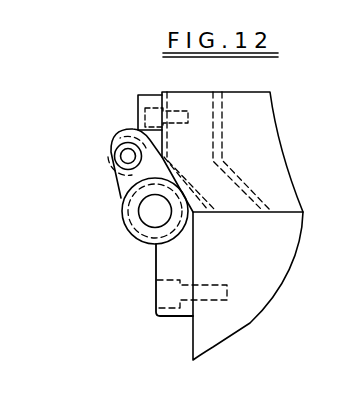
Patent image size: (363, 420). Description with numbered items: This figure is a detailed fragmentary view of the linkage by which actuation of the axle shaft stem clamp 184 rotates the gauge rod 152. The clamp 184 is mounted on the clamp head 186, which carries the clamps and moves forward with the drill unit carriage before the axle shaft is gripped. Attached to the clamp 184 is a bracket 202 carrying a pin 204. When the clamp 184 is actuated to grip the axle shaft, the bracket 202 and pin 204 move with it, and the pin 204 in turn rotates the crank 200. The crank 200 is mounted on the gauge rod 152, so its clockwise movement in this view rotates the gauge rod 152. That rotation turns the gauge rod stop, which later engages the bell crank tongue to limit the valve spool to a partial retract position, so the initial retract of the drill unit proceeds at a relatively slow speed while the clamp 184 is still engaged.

The gauge rod 152 is at (155, 217).
The axle shaft stem clamp 184 is at (277, 158).
The clamp head 186 is at (277, 263).
The crank 200 is at (122, 185).
The bracket 202 is at (140, 104).
The pin 204 is at (129, 157).